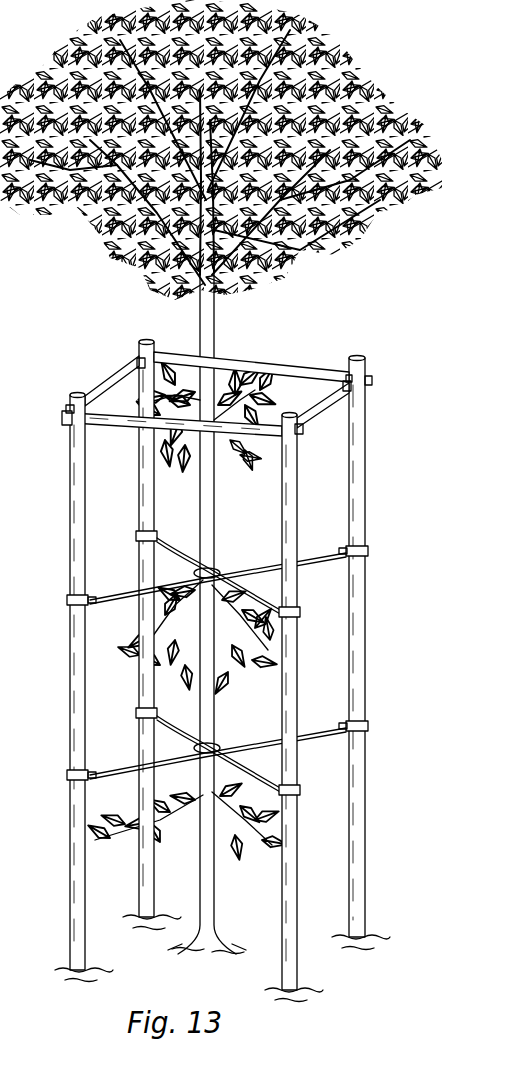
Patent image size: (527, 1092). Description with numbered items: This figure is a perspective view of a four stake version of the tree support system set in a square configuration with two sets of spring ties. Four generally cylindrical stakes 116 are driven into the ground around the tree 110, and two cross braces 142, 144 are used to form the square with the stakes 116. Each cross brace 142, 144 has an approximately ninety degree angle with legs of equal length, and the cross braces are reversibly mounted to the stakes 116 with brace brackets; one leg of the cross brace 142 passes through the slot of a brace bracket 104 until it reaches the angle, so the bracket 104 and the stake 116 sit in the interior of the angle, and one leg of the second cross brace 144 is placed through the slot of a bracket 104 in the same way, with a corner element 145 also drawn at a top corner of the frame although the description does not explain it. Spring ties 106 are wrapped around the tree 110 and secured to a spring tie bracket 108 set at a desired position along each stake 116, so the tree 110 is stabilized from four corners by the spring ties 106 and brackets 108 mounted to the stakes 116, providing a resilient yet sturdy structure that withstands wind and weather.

The brace bracket 104 is at (299, 432).
The spring ties 106 is at (88, 602).
The spring tie bracket 108 is at (366, 547).
The tree 110 is at (213, 848).
The stakes 116 is at (72, 868).
The cross brace 142 is at (110, 425).
The second cross brace 144 is at (278, 358).
The corner connector 145 is at (70, 406).